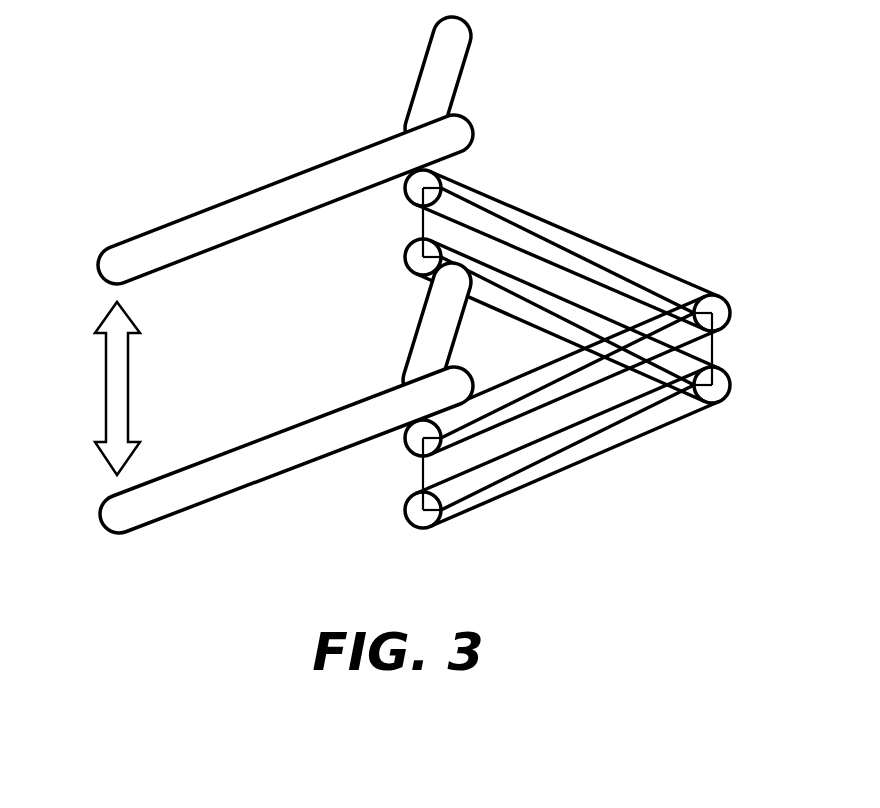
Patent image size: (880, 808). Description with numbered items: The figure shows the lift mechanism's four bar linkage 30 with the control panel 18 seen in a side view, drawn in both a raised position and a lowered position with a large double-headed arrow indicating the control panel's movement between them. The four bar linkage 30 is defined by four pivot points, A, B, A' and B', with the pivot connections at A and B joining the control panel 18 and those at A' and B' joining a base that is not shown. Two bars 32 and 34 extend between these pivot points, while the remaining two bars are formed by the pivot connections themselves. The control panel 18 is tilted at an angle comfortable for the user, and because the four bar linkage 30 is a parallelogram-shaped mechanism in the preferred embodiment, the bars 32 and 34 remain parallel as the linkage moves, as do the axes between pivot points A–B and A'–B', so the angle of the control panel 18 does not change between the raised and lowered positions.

The control panel 18 is at (131, 243).
The four bar linkage 30 is at (423, 315).
The bar 32 is at (588, 257).
The bar 34 is at (520, 290).